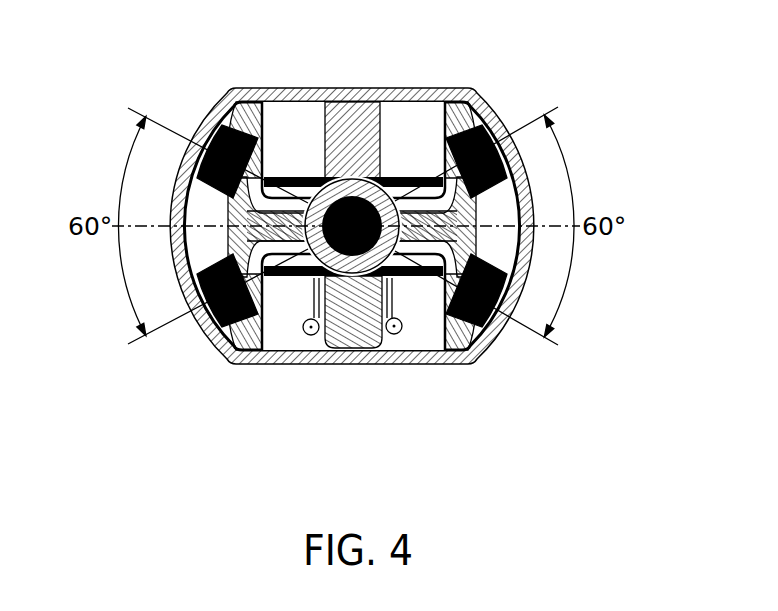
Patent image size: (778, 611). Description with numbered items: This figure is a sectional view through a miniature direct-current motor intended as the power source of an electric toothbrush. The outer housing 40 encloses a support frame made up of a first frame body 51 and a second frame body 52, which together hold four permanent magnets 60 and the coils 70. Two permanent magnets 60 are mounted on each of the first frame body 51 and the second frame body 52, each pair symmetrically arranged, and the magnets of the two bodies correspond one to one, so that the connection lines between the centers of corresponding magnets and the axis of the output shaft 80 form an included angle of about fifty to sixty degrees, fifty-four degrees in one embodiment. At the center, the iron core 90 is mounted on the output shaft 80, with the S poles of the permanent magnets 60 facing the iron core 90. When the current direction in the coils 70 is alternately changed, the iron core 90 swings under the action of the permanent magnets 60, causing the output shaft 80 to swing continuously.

The housing 40 is at (447, 90).
The first frame body 51 is at (378, 315).
The second frame body 52 is at (315, 180).
The permanent magnet 60 is at (223, 98).
The coil 70 is at (300, 180).
The output shaft 80 is at (413, 176).
The iron core 90 is at (305, 280).